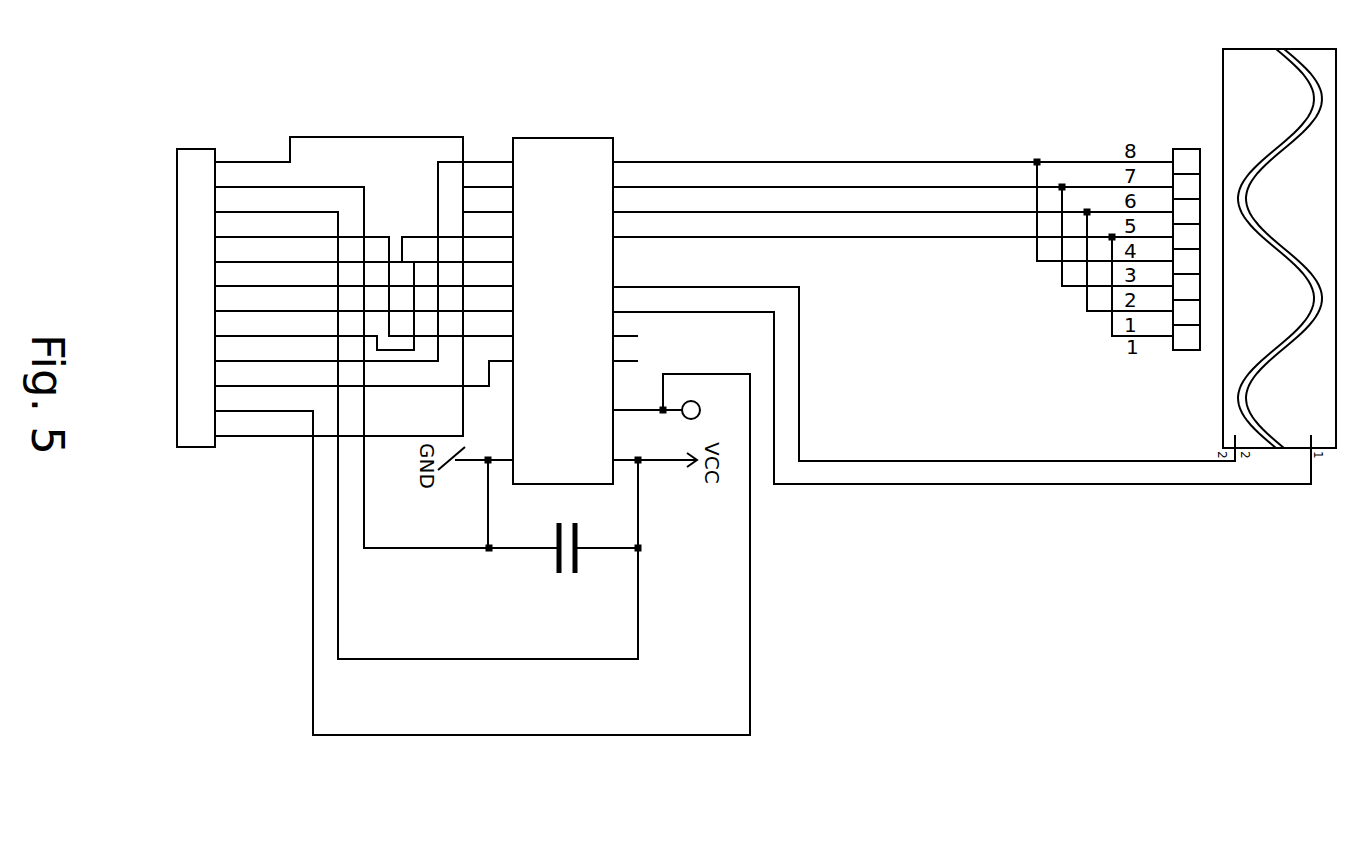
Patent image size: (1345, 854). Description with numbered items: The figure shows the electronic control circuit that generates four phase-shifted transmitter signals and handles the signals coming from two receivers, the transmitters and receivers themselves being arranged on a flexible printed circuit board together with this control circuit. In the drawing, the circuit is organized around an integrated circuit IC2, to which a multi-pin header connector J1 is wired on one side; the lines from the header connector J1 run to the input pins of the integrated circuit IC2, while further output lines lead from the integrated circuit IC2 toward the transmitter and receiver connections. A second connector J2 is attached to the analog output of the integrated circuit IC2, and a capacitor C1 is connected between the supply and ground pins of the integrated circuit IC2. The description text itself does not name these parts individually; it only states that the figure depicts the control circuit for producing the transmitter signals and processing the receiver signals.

The 12-pin header connector HDR_12 J1 is at (233, 292).
The AMT1020 touch sensor integrated circuit IC2 is at (564, 311).
The analog output connector J2 is at (676, 424).
The 100nF decoupling capacitor C1 is at (563, 580).